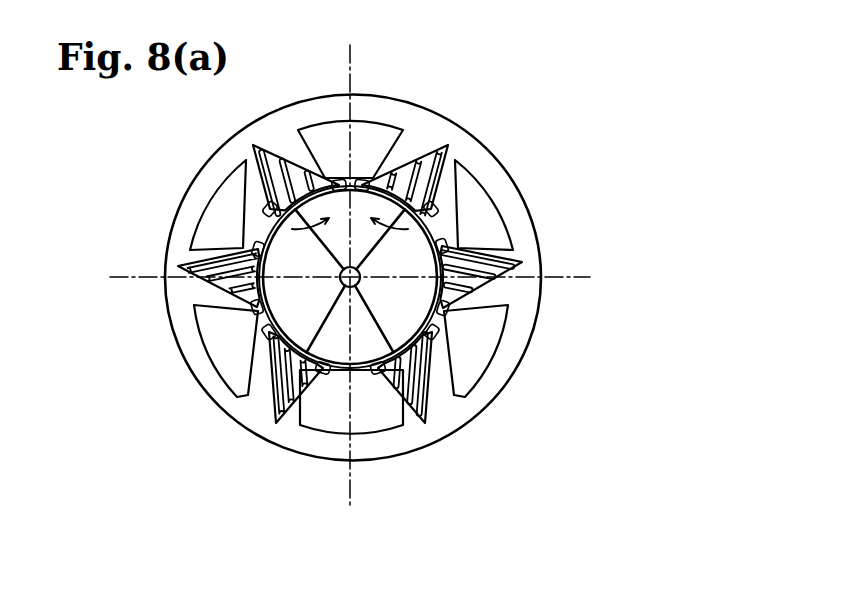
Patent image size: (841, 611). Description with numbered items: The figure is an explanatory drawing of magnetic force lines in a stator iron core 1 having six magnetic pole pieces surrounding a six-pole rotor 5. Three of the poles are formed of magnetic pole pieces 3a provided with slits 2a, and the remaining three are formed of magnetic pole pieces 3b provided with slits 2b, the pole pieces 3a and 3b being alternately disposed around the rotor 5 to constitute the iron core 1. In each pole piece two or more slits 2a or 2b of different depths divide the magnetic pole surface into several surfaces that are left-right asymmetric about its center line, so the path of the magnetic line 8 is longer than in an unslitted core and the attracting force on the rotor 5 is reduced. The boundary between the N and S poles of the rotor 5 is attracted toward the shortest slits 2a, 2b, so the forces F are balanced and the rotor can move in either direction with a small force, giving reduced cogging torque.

The stator iron core 1 is at (532, 344).
The slits 2a is at (451, 257).
The slits 2b is at (378, 372).
The magnetic pole pieces 3a is at (500, 271).
The magnetic pole pieces 3b is at (430, 400).
The rotor 5 is at (380, 300).
The magnetic line 8 is at (400, 182).
The forces F is at (290, 228).